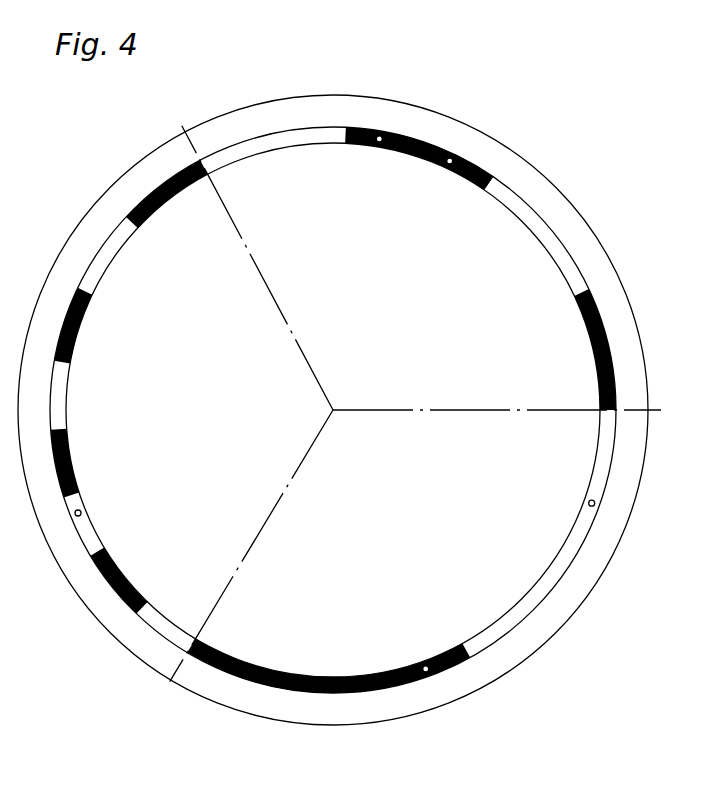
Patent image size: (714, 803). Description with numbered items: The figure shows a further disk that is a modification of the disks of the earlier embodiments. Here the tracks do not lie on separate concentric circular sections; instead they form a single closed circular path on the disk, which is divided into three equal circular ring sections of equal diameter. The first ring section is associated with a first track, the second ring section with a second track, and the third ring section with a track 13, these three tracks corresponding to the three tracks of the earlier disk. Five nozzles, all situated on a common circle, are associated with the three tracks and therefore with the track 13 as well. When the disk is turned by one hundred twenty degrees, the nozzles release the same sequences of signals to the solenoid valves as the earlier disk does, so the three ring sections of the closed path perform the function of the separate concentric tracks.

The track 13 is at (615, 438).